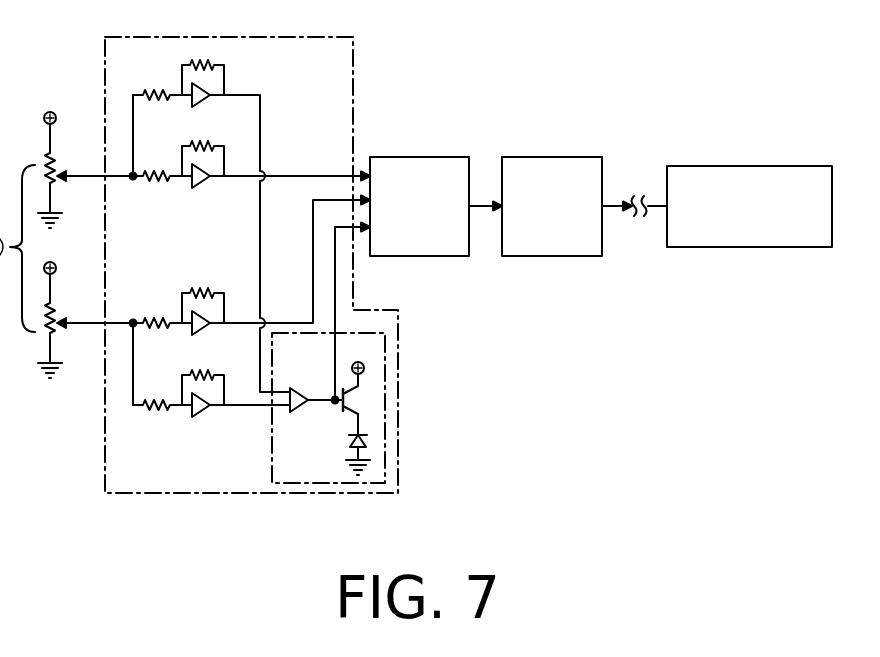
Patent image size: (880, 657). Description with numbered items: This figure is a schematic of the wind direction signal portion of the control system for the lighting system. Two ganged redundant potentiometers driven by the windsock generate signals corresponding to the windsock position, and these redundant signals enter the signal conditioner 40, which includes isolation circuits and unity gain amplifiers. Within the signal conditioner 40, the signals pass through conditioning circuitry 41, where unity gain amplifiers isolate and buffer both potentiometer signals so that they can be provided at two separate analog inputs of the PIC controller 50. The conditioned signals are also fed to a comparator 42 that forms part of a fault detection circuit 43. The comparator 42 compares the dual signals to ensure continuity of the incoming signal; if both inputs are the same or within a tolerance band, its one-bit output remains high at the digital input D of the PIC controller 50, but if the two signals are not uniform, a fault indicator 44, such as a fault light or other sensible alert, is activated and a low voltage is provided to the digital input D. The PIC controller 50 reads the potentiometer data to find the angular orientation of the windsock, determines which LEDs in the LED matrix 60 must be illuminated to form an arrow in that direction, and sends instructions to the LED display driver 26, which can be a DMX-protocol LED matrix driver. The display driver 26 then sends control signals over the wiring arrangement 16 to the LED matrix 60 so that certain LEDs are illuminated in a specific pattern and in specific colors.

The signal conditioner 40 is at (353, 82).
The conditioning circuitry 41 is at (262, 132).
The comparator 42 is at (301, 407).
The fault detection circuit 43 is at (364, 403).
The fault indicator 44 is at (371, 439).
The PIC controller 50 is at (432, 167).
The LED display driver 26 is at (537, 166).
The wiring arrangement 16 is at (652, 199).
The LED matrix 60 is at (745, 183).